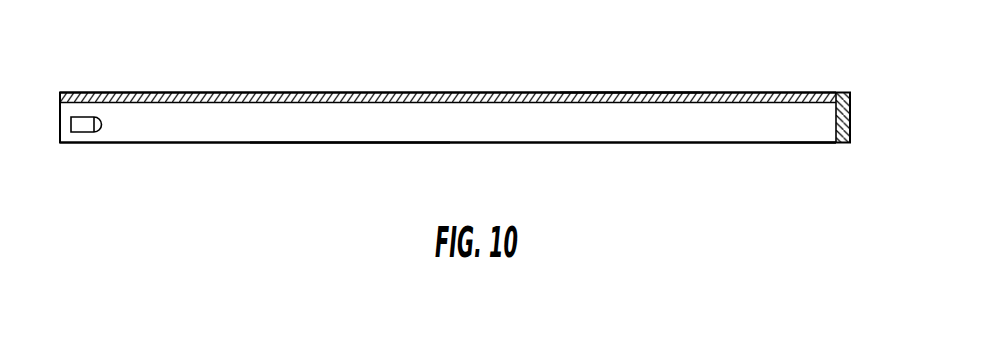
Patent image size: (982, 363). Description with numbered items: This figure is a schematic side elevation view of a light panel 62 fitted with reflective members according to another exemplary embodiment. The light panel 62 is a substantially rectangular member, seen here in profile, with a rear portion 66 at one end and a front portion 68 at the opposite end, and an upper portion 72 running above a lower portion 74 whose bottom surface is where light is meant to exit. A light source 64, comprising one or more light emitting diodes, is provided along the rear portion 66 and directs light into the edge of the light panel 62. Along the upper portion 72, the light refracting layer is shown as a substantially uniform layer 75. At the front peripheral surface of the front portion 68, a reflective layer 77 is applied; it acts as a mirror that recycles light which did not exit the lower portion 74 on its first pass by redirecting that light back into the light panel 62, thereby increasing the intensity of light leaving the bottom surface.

The light panel 62 is at (666, 184).
The light source 64 is at (83, 127).
The rear portion 66 is at (120, 119).
The front portion 68 is at (812, 133).
The upper portion 72 is at (380, 98).
The lower portion 74 is at (350, 143).
The substantially uniform layer 75 is at (603, 92).
The reflective layer 77 is at (838, 93).